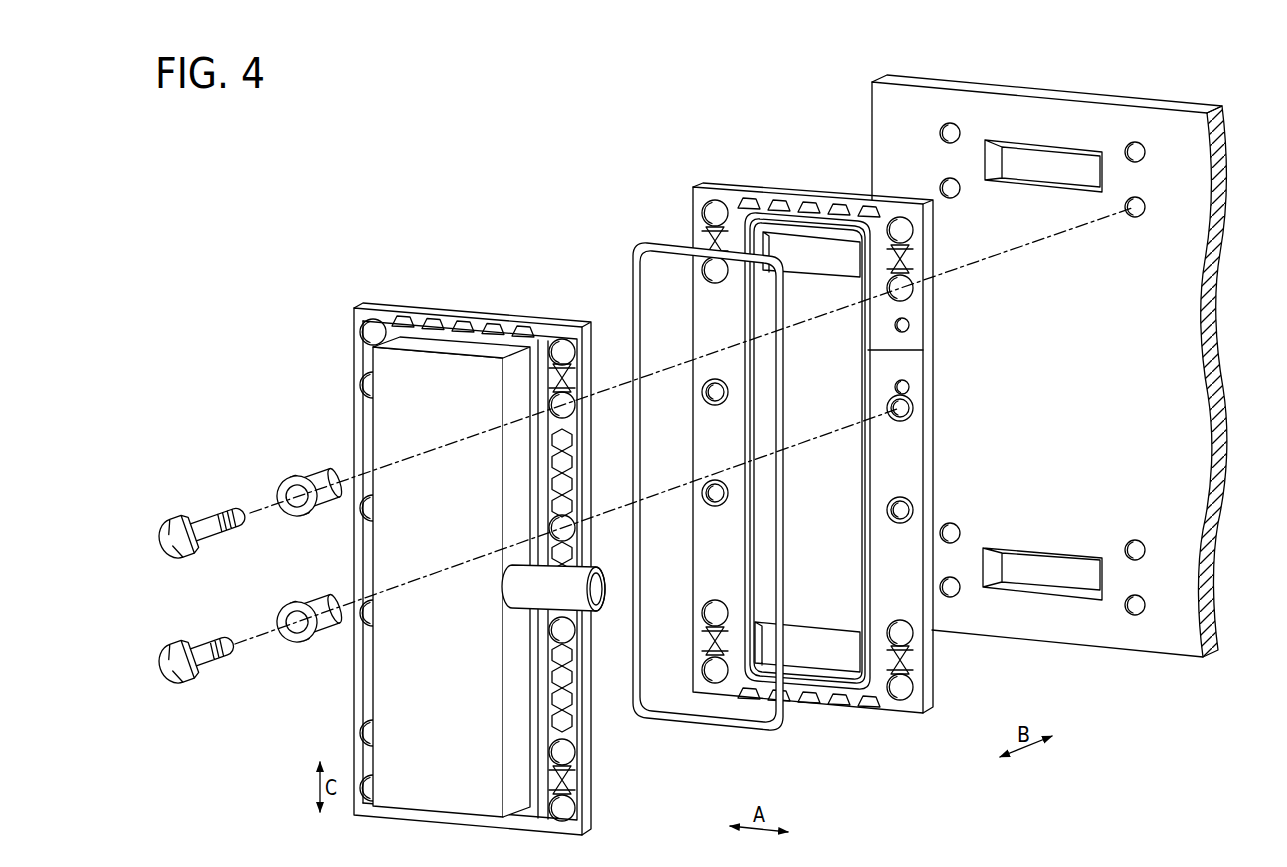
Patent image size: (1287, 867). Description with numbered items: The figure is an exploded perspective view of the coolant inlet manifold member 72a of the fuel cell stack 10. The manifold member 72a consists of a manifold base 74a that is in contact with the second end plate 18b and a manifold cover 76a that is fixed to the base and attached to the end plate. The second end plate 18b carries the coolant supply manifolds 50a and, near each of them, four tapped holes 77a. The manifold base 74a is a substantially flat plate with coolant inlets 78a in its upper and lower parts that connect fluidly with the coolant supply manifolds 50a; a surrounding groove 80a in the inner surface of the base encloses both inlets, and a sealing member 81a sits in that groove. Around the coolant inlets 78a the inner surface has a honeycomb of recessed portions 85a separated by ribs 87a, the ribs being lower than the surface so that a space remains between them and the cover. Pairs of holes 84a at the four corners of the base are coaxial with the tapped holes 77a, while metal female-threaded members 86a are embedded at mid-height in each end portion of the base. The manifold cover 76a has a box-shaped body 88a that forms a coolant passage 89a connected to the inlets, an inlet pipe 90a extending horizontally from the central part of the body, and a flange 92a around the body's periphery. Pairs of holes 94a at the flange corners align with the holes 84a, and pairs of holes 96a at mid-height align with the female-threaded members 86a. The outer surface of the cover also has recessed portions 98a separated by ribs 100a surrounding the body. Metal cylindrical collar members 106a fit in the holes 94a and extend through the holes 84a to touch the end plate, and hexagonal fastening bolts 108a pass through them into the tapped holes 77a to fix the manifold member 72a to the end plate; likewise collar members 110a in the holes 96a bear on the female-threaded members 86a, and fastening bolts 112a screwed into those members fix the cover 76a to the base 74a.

The coolant inlet manifold member 72a is at (442, 148).
The fuel cell stack 10 is at (463, 137).
The second end plate 18b is at (1020, 376).
The coolant supply manifold 50a is at (1078, 165).
The tapped hole 77a is at (950, 122).
The manifold base 74a is at (850, 440).
The hole 84a is at (712, 216).
The recessed portion 85a is at (796, 214).
The rib 87a is at (773, 210).
The coolant inlet 78a is at (846, 247).
The surrounding groove 80a is at (874, 350).
The metal female-threaded member 86a is at (914, 510).
The sealing member 81a is at (637, 241).
The manifold cover 76a is at (439, 544).
The box-shaped body 88a is at (400, 577).
The coolant passage 89a is at (395, 688).
The flange 92a is at (362, 427).
The hole 94a is at (563, 348).
The hole 96a is at (555, 526).
The recessed portion 98a is at (566, 727).
The rib 100a is at (561, 717).
The inlet pipe 90a is at (601, 597).
The cylindrical collar member 106a is at (285, 489).
The fastening bolt 108a is at (172, 532).
The cylindrical collar member 110a is at (285, 612).
The fastening bolt 112a is at (173, 655).